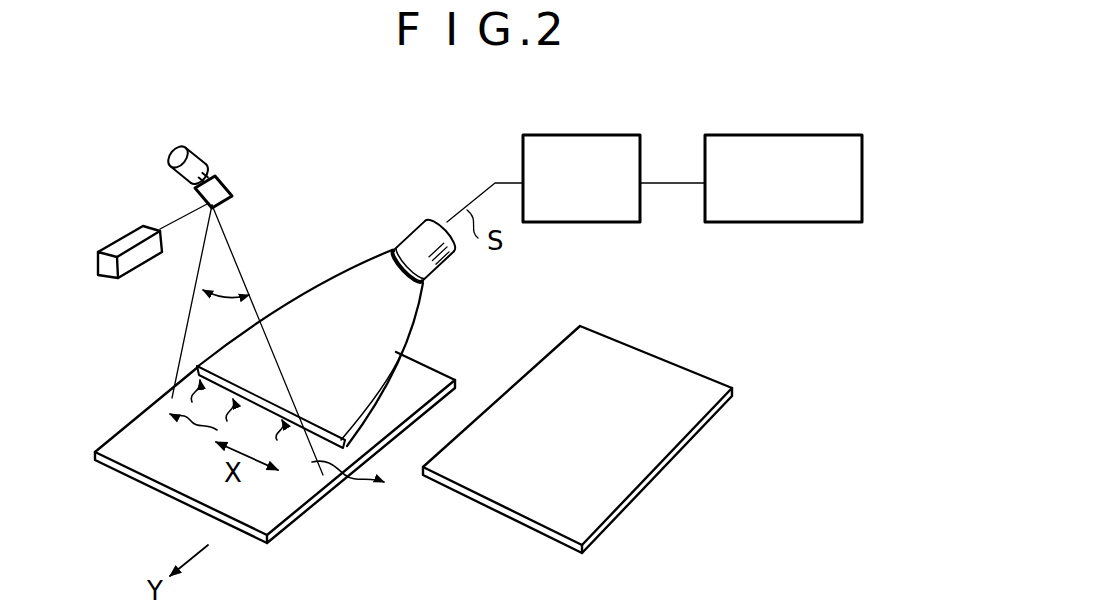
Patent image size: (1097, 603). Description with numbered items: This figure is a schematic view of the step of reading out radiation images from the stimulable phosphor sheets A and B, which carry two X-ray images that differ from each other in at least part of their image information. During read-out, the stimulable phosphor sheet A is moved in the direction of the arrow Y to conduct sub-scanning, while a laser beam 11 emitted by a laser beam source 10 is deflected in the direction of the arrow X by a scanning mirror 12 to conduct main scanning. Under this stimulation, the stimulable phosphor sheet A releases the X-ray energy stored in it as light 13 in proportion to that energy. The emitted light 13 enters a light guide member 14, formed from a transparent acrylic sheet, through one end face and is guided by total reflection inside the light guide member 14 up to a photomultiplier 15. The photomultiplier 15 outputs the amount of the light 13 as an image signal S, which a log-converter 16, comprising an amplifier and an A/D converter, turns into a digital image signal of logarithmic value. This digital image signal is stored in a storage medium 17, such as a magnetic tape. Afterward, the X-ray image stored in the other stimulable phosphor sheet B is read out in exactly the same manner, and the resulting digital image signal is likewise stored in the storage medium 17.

The laser beam source 10 is at (128, 235).
The laser beam 11 is at (238, 265).
The scanning mirror 12 is at (228, 190).
The light 13 is at (248, 398).
The light guide member 14 is at (353, 288).
The photomultiplier 15 is at (418, 230).
The log-converter 16 is at (597, 135).
The storage medium 17 is at (803, 135).
The stimulable phosphor sheet A is at (410, 392).
The stimulable phosphor sheet B is at (672, 427).